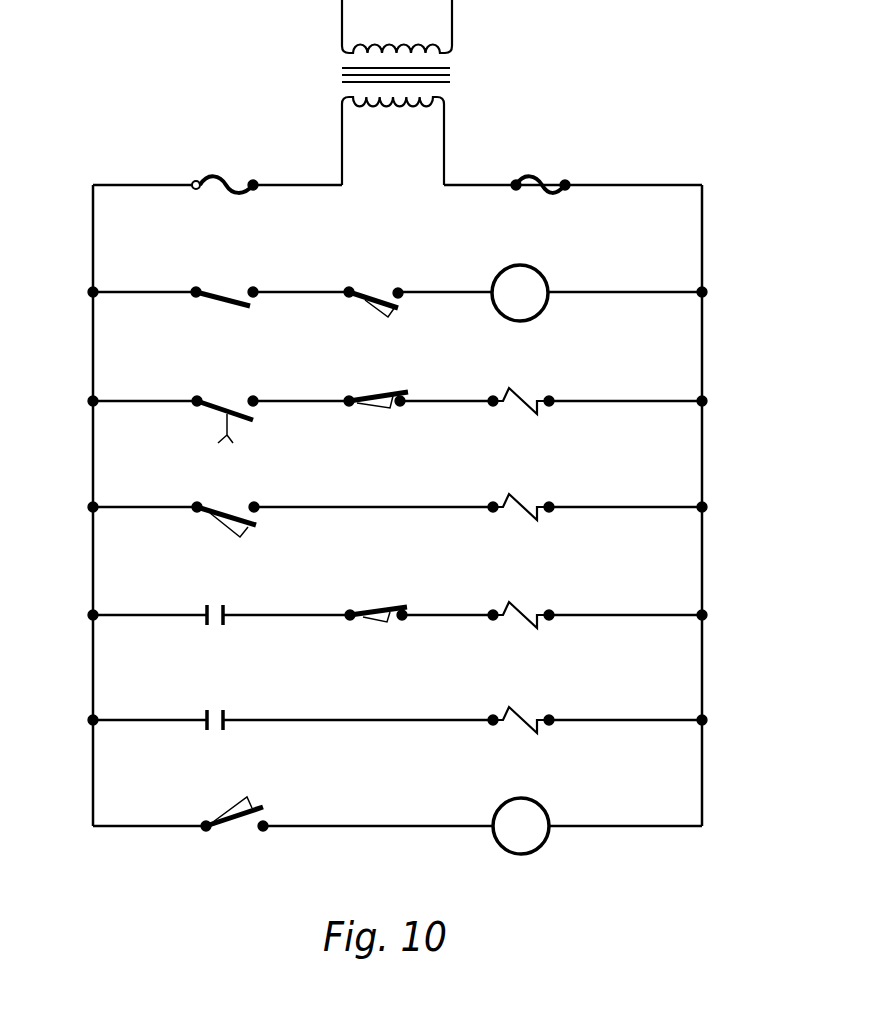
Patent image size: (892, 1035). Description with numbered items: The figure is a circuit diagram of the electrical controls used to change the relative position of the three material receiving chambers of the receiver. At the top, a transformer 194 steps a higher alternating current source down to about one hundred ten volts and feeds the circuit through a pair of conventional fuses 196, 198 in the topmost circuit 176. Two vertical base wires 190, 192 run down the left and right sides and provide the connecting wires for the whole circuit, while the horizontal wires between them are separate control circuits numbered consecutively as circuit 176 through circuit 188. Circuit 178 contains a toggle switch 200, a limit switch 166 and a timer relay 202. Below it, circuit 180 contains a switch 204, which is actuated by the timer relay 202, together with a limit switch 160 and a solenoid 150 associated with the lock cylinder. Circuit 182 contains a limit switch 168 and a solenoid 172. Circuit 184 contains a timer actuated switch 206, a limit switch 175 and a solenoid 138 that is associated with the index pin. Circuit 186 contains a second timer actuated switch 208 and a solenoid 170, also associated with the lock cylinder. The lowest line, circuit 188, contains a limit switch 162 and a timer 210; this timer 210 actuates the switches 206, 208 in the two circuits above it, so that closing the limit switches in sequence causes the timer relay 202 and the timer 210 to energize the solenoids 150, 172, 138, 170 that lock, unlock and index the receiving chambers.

The solenoid 138 is at (523, 608).
The solenoid 150 is at (522, 395).
The limit switch 160 is at (380, 387).
The limit switch 162 is at (232, 812).
The limit switch 166 is at (380, 280).
The limit switch 168 is at (230, 490).
The solenoid 170 is at (525, 713).
The solenoid 172 is at (525, 502).
The limit switch 175 is at (385, 605).
The circuit 176 is at (111, 185).
The circuit 178 is at (108, 291).
The circuit 180 is at (108, 400).
The circuit 182 is at (108, 506).
The circuit 184 is at (108, 614).
The circuit 186 is at (108, 719).
The circuit 188 is at (110, 826).
The base wire 190 is at (92, 338).
The base wire 192 is at (703, 360).
The transformer 194 is at (455, 71).
The fuse 196 is at (232, 165).
The fuse 198 is at (542, 182).
The toggle switch 200 is at (231, 280).
The timer relay 202 is at (545, 273).
The switch 204 is at (228, 387).
The timer actuated switch 206 is at (216, 608).
The timer actuated switch 208 is at (216, 713).
The timer 210 is at (549, 815).